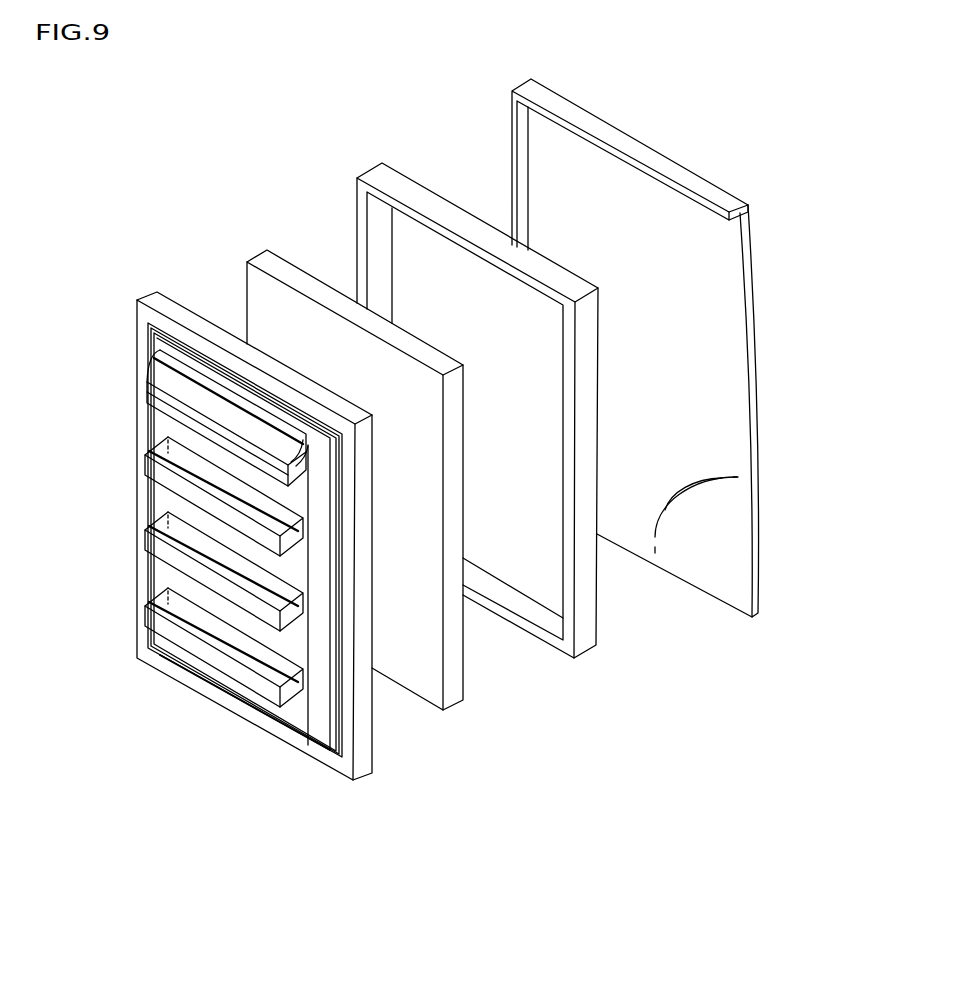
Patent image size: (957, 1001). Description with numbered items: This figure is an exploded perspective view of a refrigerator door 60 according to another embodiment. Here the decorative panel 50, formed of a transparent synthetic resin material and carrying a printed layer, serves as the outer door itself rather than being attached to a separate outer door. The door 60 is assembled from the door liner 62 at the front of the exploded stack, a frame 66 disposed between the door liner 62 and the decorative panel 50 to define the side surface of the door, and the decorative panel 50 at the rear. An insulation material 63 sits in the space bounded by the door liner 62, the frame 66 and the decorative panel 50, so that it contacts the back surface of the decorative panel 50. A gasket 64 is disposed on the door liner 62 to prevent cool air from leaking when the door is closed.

The decorative panel 50 is at (742, 304).
The door 60 is at (362, 150).
The door liner 62 is at (315, 718).
The insulation material 63 is at (430, 688).
The gasket 64 is at (337, 735).
The frame 66 is at (585, 640).